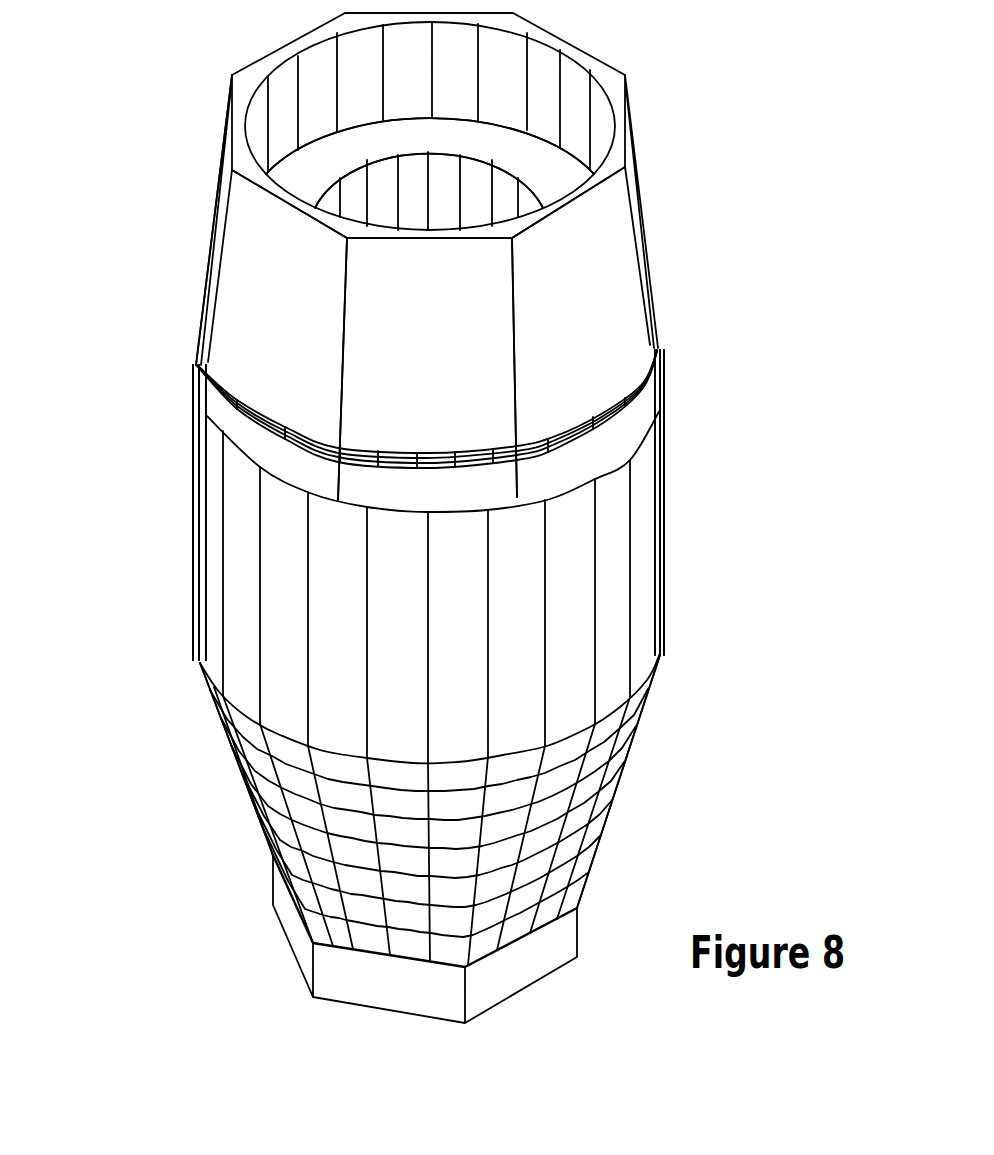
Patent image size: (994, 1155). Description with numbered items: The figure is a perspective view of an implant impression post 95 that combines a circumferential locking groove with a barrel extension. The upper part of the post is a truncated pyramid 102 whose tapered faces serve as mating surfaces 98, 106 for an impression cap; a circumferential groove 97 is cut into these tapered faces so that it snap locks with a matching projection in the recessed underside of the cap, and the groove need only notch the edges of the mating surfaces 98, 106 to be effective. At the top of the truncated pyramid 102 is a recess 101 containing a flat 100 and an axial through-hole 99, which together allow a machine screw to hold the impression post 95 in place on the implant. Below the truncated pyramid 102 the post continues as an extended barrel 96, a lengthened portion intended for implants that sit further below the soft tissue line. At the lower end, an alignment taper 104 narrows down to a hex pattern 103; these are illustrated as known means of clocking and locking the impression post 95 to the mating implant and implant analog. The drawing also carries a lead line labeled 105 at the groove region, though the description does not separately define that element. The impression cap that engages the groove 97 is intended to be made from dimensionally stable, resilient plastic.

The implant impression post 95 is at (680, 258).
The barrel 96 is at (640, 558).
The circumferential groove 97 is at (522, 458).
The mating surface 98 is at (268, 310).
The axial through-hole 99 is at (480, 192).
The flat 100 is at (330, 153).
The recess 101 is at (358, 89).
The truncated pyramid 102 is at (612, 80).
The hex pattern 103 is at (352, 973).
The alignment taper 104 is at (365, 852).
The ring groove 105 is at (323, 456).
The mating surface 106 is at (420, 332).